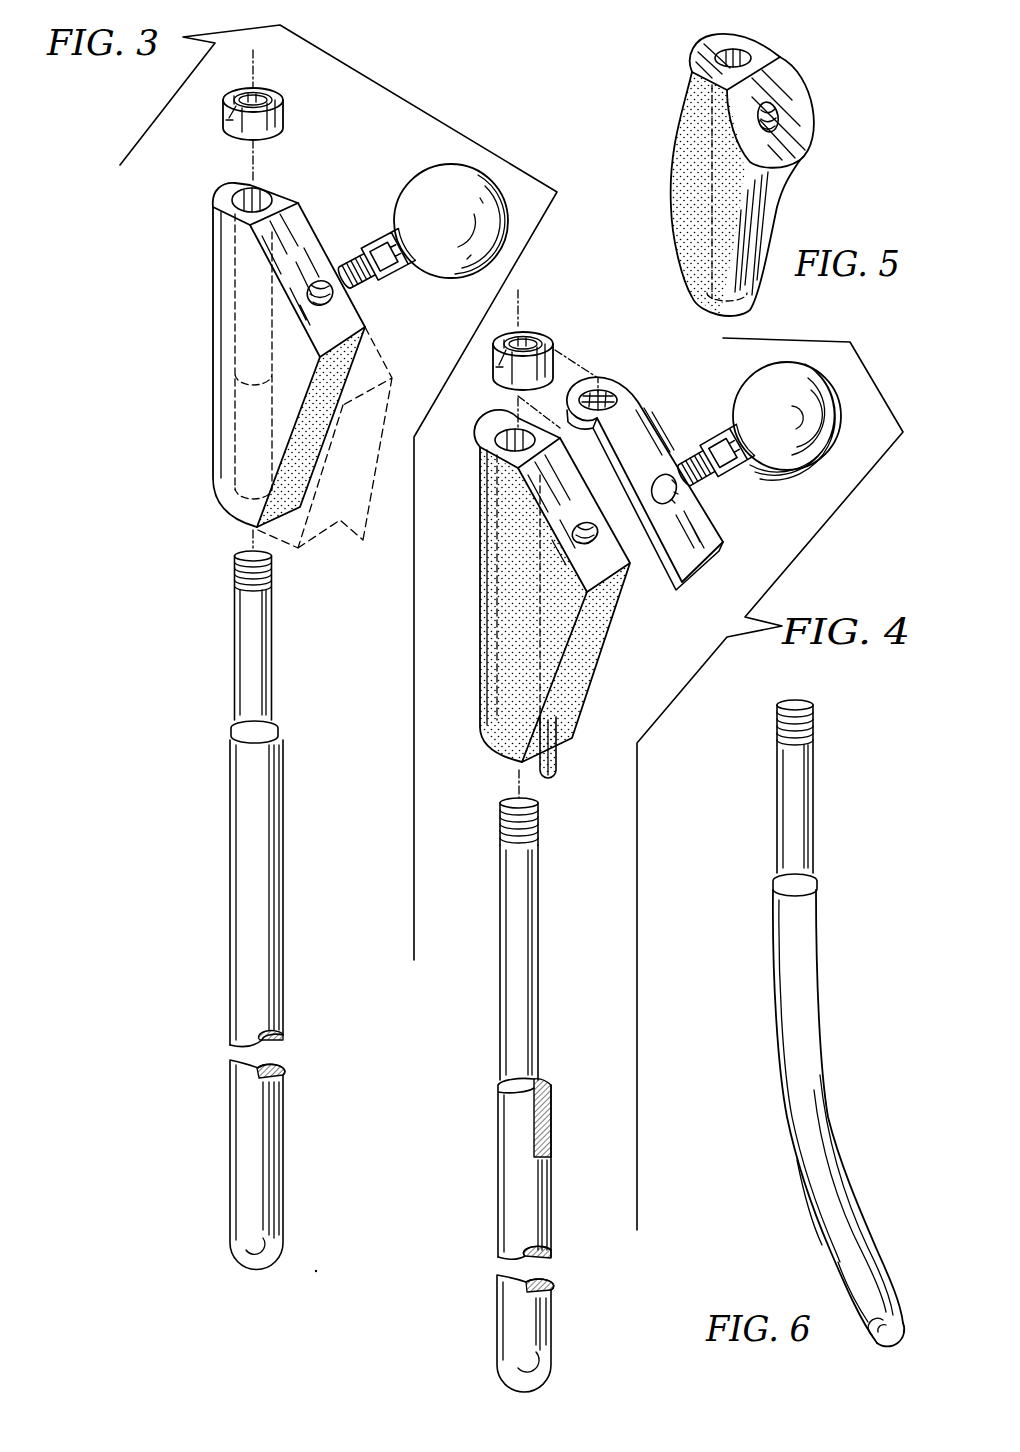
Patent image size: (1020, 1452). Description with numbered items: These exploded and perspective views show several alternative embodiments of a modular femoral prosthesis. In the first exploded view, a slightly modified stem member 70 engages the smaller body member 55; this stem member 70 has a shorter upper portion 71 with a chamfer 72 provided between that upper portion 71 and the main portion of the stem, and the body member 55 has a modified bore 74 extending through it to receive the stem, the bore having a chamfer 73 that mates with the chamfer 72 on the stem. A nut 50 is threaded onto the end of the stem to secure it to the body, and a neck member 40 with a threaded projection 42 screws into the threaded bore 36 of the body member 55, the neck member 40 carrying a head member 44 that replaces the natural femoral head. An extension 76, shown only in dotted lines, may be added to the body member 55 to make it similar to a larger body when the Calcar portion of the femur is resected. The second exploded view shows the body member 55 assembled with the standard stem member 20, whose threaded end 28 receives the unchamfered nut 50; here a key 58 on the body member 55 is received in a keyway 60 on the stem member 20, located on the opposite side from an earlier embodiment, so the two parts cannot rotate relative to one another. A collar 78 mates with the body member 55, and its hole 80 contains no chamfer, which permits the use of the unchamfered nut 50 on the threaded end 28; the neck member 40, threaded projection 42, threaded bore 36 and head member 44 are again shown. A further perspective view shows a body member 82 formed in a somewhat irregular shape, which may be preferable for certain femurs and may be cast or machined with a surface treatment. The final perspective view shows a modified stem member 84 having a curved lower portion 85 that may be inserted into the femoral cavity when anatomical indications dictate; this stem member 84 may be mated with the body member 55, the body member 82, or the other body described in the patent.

In FIG. 4, the stem member 20 is at (527, 1042).
In FIG. 4, the threaded end 28 is at (538, 828).
In FIG. 3, the threaded bore 36 is at (323, 283).
In FIG. 4, the threaded bore 36 is at (600, 553).
In FIG. 3, the neck member 40 is at (402, 280).
In FIG. 4, the neck member 40 is at (743, 481).
In FIG. 3, the threaded projection 42 is at (362, 294).
In FIG. 4, the threaded projection 42 is at (688, 458).
In FIG. 3, the head member 44 is at (418, 200).
In FIG. 4, the head member 44 is at (810, 462).
In FIG. 3, the nut 50 is at (284, 124).
In FIG. 4, the nut 50 is at (545, 348).
In FIG. 3, the body member 55 is at (214, 455).
In FIG. 4, the body member 55 is at (608, 612).
In FIG. 4, the key 58 is at (558, 768).
In FIG. 4, the keyway 60 is at (551, 1097).
In FIG. 3, the stem member 70 is at (237, 848).
In FIG. 3, the upper portion 71 is at (271, 668).
In FIG. 3, the chamfer 72 is at (242, 732).
In FIG. 3, the chamfer 73 is at (236, 385).
In FIG. 3, the modified bore 74 is at (247, 192).
In FIG. 3, the extension 76 is at (363, 518).
In FIG. 4, the collar 78 is at (718, 546).
In FIG. 4, the hole 80 is at (613, 397).
In FIG. 5, the body member 82 is at (783, 208).
In FIG. 6, the stem member 84 is at (823, 1047).
In FIG. 6, the curved lower portion 85 is at (810, 1108).